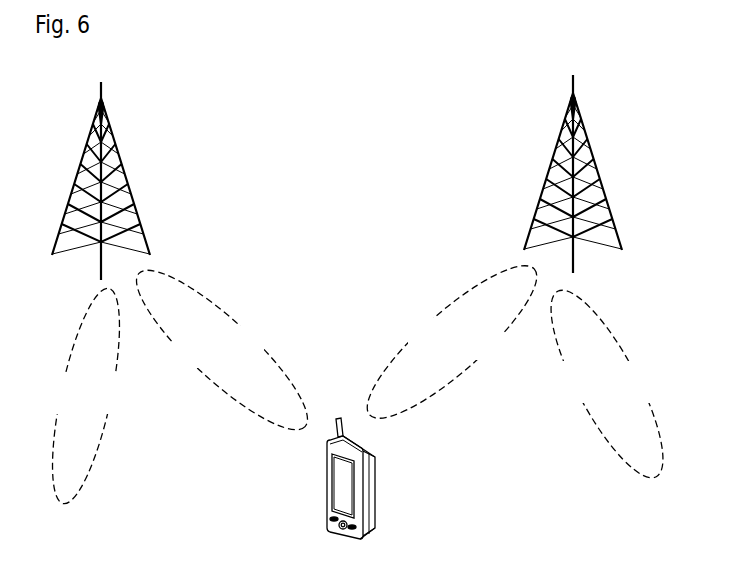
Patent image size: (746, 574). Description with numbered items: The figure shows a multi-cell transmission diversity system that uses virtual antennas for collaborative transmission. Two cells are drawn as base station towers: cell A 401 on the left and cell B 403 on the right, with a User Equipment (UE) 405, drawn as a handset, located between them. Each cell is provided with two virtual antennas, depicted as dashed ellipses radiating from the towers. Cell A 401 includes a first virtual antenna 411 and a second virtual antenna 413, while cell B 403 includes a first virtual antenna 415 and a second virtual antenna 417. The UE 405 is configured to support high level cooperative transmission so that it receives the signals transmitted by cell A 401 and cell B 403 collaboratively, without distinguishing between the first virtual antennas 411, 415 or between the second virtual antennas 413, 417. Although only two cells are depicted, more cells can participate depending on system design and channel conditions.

The cell A 401 is at (119, 146).
The cell B 403 is at (592, 140).
The User Equipment (UE) 405 is at (375, 492).
The virtual antenna 0 411 is at (80, 376).
The virtual antenna 1 413 is at (218, 322).
The virtual antenna 0 415 is at (452, 320).
The virtual antenna 1 417 is at (610, 358).